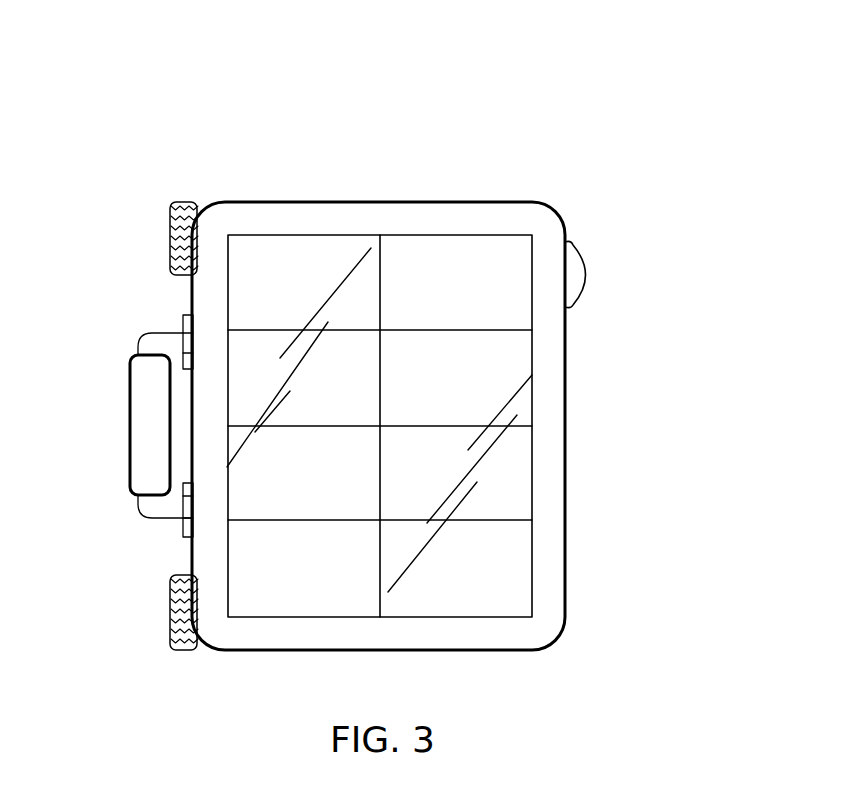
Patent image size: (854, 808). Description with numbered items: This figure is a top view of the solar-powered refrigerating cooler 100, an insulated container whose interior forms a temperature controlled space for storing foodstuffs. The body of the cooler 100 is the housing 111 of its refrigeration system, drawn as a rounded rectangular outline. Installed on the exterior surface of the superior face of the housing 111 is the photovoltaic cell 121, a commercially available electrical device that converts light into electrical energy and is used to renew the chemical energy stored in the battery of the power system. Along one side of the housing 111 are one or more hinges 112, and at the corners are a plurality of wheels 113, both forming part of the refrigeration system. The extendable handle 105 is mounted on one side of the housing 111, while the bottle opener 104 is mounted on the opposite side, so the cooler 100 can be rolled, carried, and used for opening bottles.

The solar-powered refrigerating cooler 100 is at (128, 80).
The bottle opener 104 is at (598, 272).
The extendable handle 105 is at (140, 463).
The housing 111 is at (420, 201).
The hinges 112 is at (184, 333).
The wheels 113 is at (172, 257).
The photovoltaic cell 121 is at (503, 265).